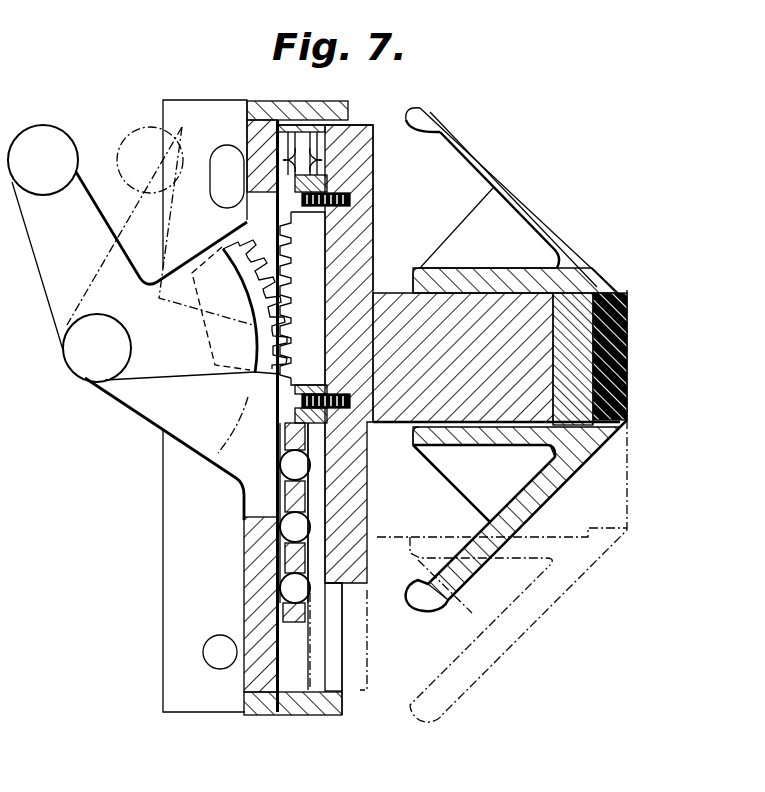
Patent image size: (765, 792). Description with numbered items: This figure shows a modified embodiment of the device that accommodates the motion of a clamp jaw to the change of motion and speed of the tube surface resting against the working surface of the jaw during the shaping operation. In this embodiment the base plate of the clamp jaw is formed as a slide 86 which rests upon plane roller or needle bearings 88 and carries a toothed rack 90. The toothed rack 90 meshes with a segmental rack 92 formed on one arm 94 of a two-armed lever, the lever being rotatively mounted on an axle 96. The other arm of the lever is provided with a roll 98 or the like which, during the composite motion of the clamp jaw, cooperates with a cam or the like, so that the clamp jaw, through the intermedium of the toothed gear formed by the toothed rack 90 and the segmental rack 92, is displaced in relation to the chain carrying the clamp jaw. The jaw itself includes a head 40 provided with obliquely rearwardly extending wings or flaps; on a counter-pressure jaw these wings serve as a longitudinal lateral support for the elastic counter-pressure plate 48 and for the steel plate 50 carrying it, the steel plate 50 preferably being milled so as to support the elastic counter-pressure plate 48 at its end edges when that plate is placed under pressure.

The roll 98 is at (50, 125).
The axle 96 is at (77, 350).
The arm of two-armed lever 94 is at (163, 370).
The roller or needle bearings 88 is at (293, 530).
The slide 86 is at (370, 208).
The segmental rack 92 is at (300, 278).
The toothed rack 90 is at (307, 300).
The head 40 is at (510, 290).
The steel plate 50 is at (597, 285).
The elastic counter-pressure plate 48 is at (627, 356).